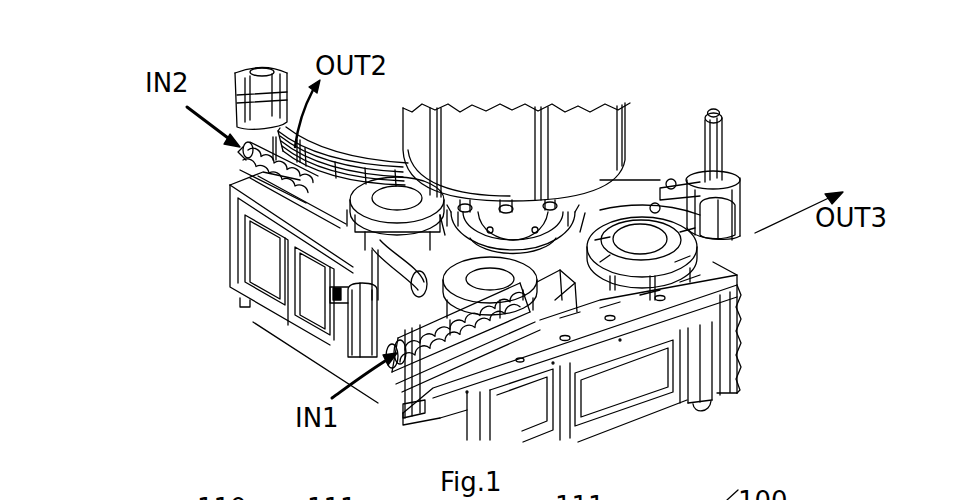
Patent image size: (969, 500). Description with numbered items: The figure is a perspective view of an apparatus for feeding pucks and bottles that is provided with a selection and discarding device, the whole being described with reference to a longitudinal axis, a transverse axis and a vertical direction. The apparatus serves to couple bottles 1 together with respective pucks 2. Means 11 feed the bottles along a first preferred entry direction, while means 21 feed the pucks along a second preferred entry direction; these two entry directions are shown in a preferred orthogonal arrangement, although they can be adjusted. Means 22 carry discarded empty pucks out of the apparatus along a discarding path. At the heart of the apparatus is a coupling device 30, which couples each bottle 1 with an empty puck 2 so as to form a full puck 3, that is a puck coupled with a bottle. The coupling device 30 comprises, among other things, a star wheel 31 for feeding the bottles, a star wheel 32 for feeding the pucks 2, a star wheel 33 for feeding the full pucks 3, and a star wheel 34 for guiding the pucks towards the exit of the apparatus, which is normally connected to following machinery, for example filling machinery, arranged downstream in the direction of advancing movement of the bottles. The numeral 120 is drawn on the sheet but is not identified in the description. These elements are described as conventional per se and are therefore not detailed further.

The bottle 1 is at (355, 302).
The puck 2 is at (252, 103).
The full puck 3 is at (750, 168).
The means for feeding the bottles 11 is at (420, 342).
The means for feeding the pucks 21 is at (278, 163).
The means for exiting discarded empty pucks 22 is at (322, 150).
The coupling device 30 is at (480, 128).
The star wheel for feeding bottles 31 is at (447, 278).
The star wheel for feeding pucks 32 is at (373, 198).
The star wheel for feeding full pucks 33 is at (573, 203).
The star wheel for guiding the pucks towards the exit 34 is at (618, 247).
The station 120 is at (528, 499).